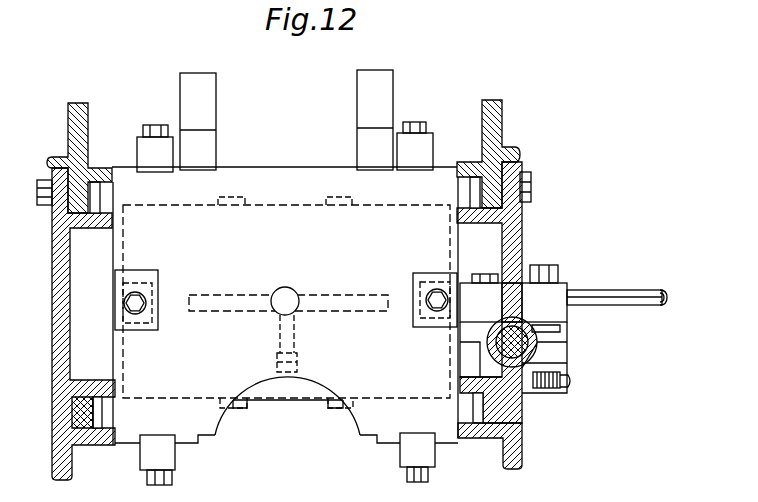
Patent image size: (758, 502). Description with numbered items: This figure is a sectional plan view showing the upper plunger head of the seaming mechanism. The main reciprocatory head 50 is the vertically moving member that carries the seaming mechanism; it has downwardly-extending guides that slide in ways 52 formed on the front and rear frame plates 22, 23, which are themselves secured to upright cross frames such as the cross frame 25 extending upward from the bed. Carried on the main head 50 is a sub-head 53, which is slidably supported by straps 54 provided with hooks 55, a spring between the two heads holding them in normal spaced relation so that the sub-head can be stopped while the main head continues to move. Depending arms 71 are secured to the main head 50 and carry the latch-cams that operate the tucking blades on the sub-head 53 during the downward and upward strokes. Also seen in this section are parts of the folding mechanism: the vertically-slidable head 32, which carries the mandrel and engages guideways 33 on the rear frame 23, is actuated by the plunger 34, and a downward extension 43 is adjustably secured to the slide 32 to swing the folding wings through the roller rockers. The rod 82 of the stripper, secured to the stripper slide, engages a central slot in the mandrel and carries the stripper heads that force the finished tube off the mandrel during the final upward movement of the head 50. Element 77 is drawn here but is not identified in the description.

The front frame plate 22 is at (52, 376).
The rear frame 23 is at (522, 432).
The upright cross frame 25 is at (503, 111).
The vertically-slidable head 32 is at (567, 330).
The guideways 33 is at (566, 358).
The plunger 34 is at (527, 306).
The downward extension 43 is at (568, 287).
The main reciprocatory head 50 is at (286, 302).
The ways 52 is at (97, 168).
The sub-head 53 is at (287, 397).
The straps 54 is at (145, 330).
The hooks 55 is at (158, 280).
The depending arms 71 is at (357, 106).
The bar 77 is at (340, 312).
The rod 82 is at (659, 308).